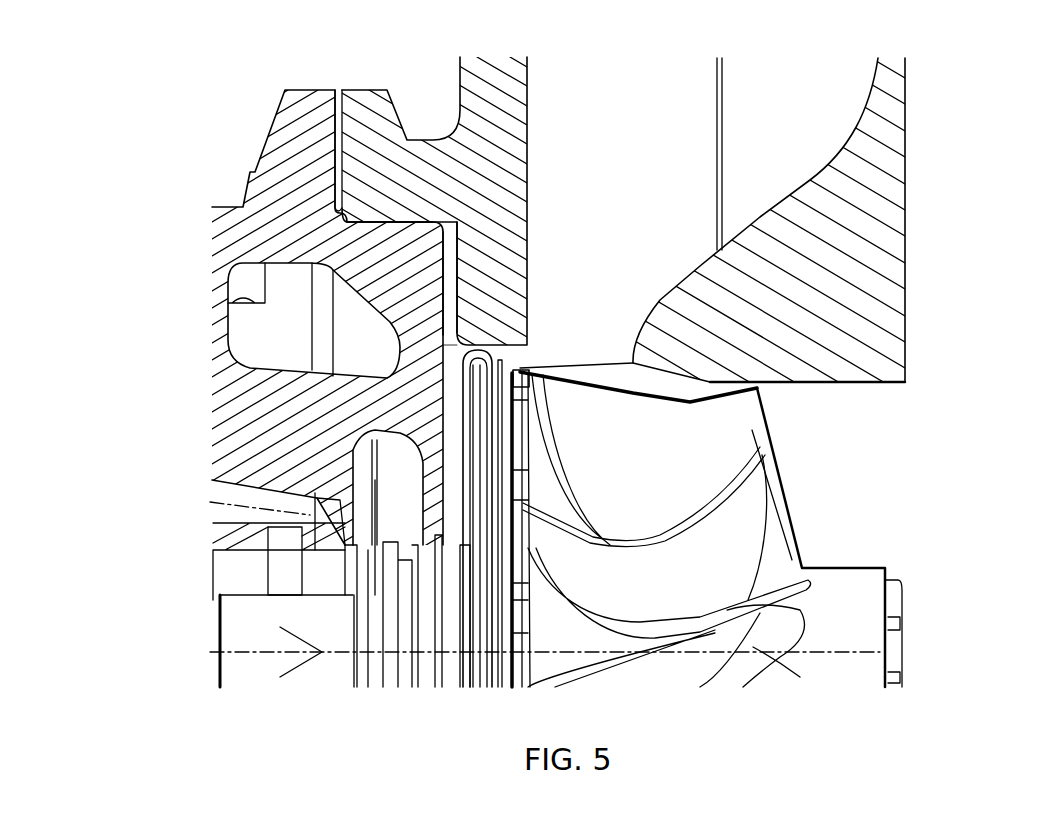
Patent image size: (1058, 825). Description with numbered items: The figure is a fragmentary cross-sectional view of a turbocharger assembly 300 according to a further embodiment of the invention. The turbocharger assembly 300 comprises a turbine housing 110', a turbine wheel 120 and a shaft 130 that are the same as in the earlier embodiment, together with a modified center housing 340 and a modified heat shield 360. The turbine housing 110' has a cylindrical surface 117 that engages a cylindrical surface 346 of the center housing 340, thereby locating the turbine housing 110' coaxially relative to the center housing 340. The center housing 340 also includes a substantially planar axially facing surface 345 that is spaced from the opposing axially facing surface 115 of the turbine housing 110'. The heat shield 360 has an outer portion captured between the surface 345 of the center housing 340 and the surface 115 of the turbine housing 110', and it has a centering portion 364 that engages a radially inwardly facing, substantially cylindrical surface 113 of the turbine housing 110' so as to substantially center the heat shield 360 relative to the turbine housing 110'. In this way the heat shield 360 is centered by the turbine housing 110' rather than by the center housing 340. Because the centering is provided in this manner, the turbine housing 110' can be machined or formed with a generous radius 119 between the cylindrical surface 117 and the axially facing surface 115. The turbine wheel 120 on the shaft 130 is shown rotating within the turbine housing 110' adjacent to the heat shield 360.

The turbocharger assembly 300 is at (203, 87).
The turbine housing 110' is at (494, 193).
The radially inwardly facing substantially cylindrical surface 113 is at (514, 350).
The axially facing surface 115 is at (453, 267).
The cylindrical surface 117 is at (413, 223).
The generous radius 119 is at (447, 227).
The turbine wheel 120 is at (797, 522).
The shaft 130 is at (425, 667).
The center housing 340 is at (240, 433).
The substantially planar axially facing surface 345 is at (443, 243).
The cylindrical surface 346 is at (409, 226).
The heat shield 360 is at (492, 429).
The centering portion 364 is at (345, 328).